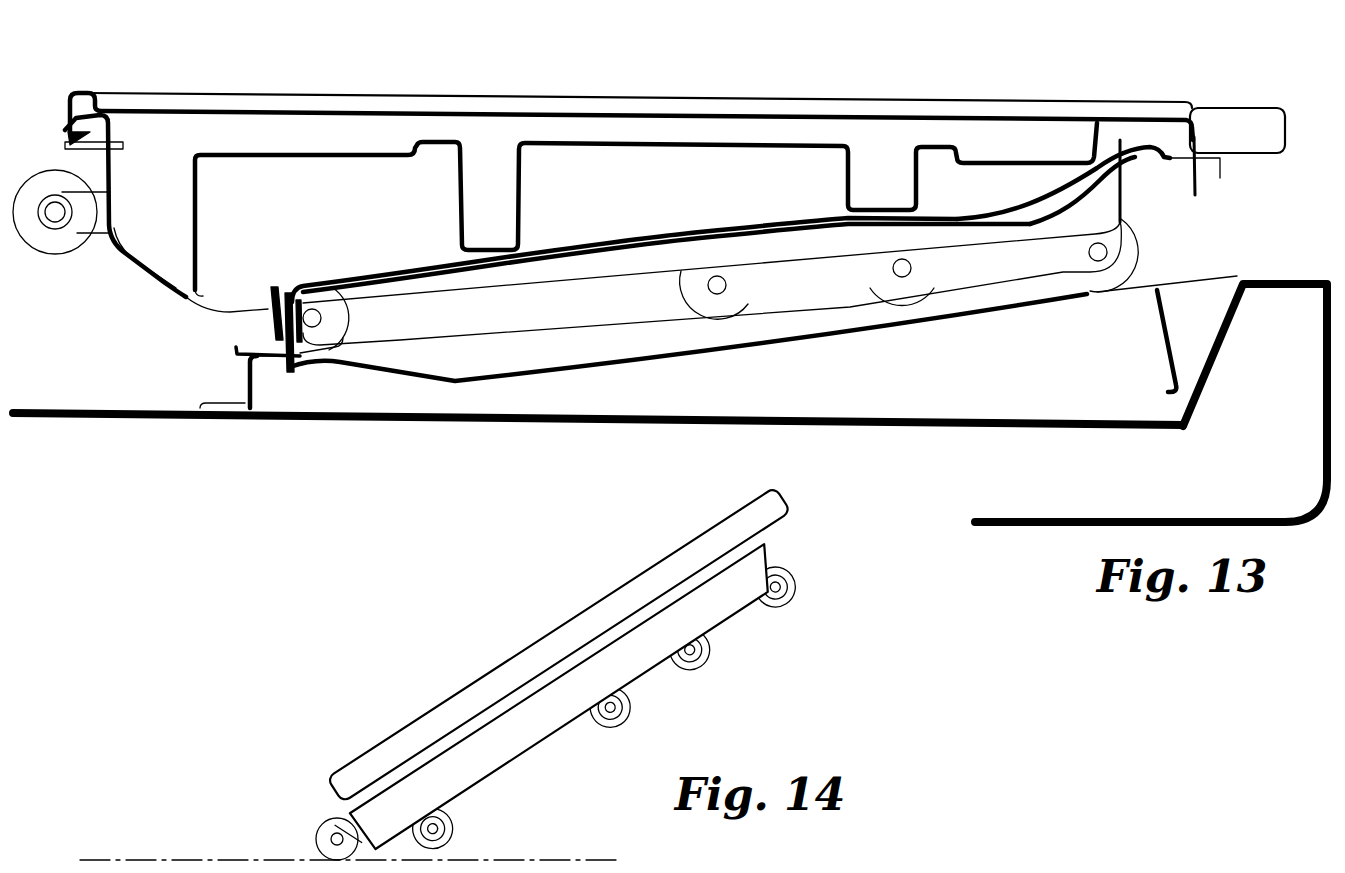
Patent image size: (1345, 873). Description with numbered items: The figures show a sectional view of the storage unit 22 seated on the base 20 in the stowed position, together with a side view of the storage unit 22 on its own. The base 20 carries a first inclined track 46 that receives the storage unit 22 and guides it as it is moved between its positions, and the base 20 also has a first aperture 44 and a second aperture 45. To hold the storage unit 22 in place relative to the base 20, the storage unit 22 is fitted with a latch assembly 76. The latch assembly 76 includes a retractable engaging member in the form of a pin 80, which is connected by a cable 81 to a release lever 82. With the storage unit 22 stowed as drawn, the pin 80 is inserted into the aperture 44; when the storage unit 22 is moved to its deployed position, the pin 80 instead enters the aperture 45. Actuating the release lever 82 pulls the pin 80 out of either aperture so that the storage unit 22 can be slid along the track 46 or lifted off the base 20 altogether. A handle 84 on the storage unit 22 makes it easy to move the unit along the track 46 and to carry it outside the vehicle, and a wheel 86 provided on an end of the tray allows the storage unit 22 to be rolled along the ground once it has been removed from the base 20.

In FIG. 13, the base 20 is at (248, 372).
In FIG. 13, the storage unit 22 is at (187, 95).
In FIG. 13, the first aperture 44 is at (285, 370).
In FIG. 13, the second aperture 45 is at (1095, 297).
In FIG. 13, the first inclined track 46 is at (642, 322).
In FIG. 13, the latch assembly 76 is at (1232, 172).
In FIG. 13, the pin 80 is at (287, 372).
In FIG. 13, the cable 81 is at (677, 227).
In FIG. 13, the release lever 82 is at (1183, 157).
In FIG. 13, the handle 84 is at (1233, 105).
In FIG. 14, the handle 84 is at (773, 520).
In FIG. 14, the wheel 86 is at (316, 838).